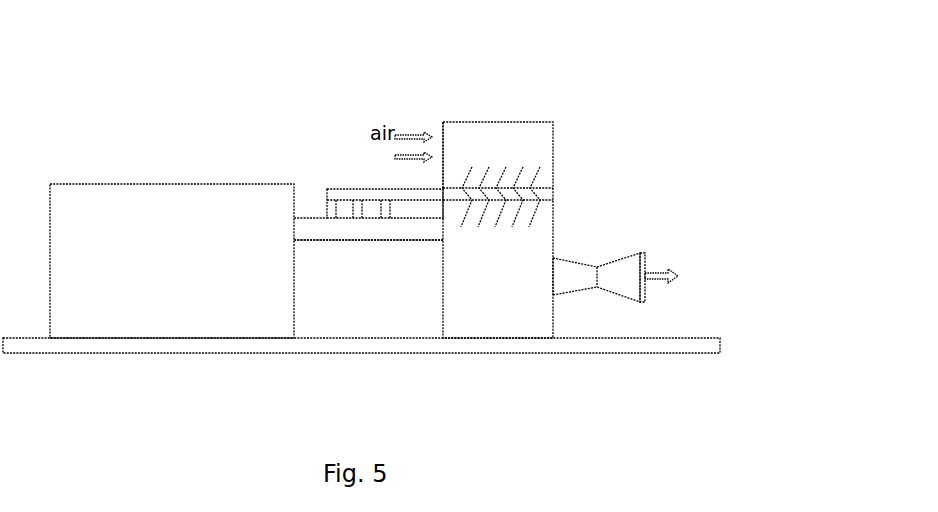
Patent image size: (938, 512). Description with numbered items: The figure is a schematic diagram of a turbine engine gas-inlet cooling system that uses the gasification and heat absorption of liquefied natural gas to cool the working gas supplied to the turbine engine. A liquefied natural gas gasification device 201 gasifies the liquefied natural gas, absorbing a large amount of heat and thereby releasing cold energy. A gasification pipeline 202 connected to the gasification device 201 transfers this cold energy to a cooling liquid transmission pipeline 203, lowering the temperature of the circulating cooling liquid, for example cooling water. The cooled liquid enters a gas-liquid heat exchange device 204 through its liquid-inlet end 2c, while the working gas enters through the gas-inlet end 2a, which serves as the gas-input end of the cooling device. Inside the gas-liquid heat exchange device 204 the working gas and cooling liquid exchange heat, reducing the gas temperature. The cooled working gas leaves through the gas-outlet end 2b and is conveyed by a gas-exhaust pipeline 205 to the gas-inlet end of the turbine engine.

The liquefied natural gas gasification device 201 is at (127, 184).
The gasification pipeline 202 is at (351, 240).
The cooling liquid transmission pipeline 203 is at (337, 189).
The gas-liquid heat exchange device 204 is at (500, 320).
The gas-exhaust pipeline 205 is at (624, 278).
The gas-inlet end 2a is at (440, 137).
The gas-outlet end 2b is at (555, 277).
The liquid-inlet end 2c is at (438, 228).